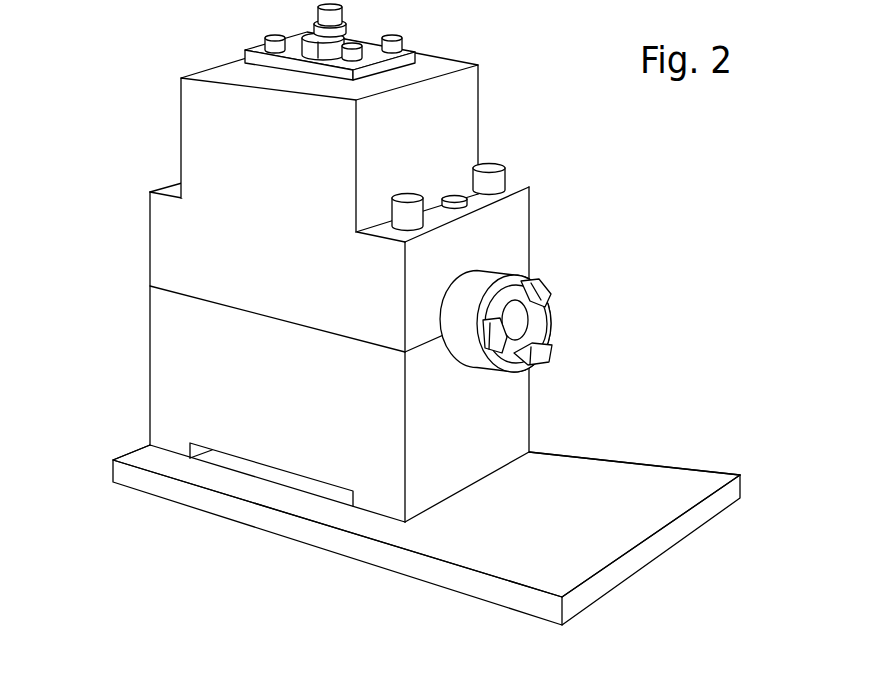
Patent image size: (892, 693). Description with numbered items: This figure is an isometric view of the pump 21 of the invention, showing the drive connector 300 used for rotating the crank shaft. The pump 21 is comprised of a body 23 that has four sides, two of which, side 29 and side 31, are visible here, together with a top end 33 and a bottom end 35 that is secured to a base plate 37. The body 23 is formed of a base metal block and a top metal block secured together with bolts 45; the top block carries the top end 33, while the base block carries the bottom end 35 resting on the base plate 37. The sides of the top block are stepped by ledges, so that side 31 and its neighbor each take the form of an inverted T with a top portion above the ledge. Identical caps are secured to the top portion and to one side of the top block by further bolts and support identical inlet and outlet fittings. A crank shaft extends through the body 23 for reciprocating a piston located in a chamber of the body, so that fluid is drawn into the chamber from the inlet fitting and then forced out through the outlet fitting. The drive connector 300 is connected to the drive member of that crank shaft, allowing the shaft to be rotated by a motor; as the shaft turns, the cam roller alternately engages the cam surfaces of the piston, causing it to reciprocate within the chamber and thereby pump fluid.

The pump 21 is at (402, 314).
The body 23 is at (337, 329).
The side 29 is at (515, 215).
The side 31 is at (172, 367).
The top end 33 is at (445, 43).
The bottom end 35 is at (252, 485).
The base plate 37 is at (665, 457).
The bolts 45 is at (410, 197).
The drive connector 300 is at (547, 312).